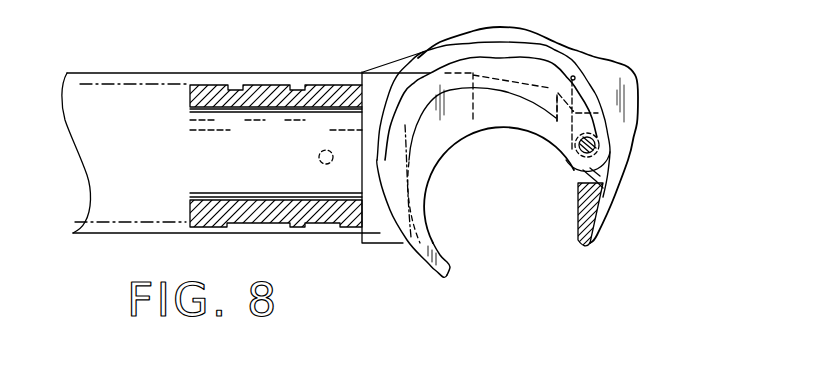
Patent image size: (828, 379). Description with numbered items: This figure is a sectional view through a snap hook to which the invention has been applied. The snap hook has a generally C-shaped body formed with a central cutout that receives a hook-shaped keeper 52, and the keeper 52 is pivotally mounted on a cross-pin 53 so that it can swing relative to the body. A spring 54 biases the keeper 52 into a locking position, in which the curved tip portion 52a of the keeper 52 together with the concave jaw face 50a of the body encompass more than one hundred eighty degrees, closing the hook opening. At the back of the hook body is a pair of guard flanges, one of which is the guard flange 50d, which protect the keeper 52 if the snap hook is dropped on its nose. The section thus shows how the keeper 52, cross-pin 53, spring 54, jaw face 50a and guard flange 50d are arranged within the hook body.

The guard flange 50d is at (600, 57).
The concave jaw face 50a is at (578, 187).
The keeper 52 is at (423, 272).
The curved tip portion 52a is at (437, 247).
The cross-pin 53 is at (595, 139).
The spring 54 is at (600, 177).